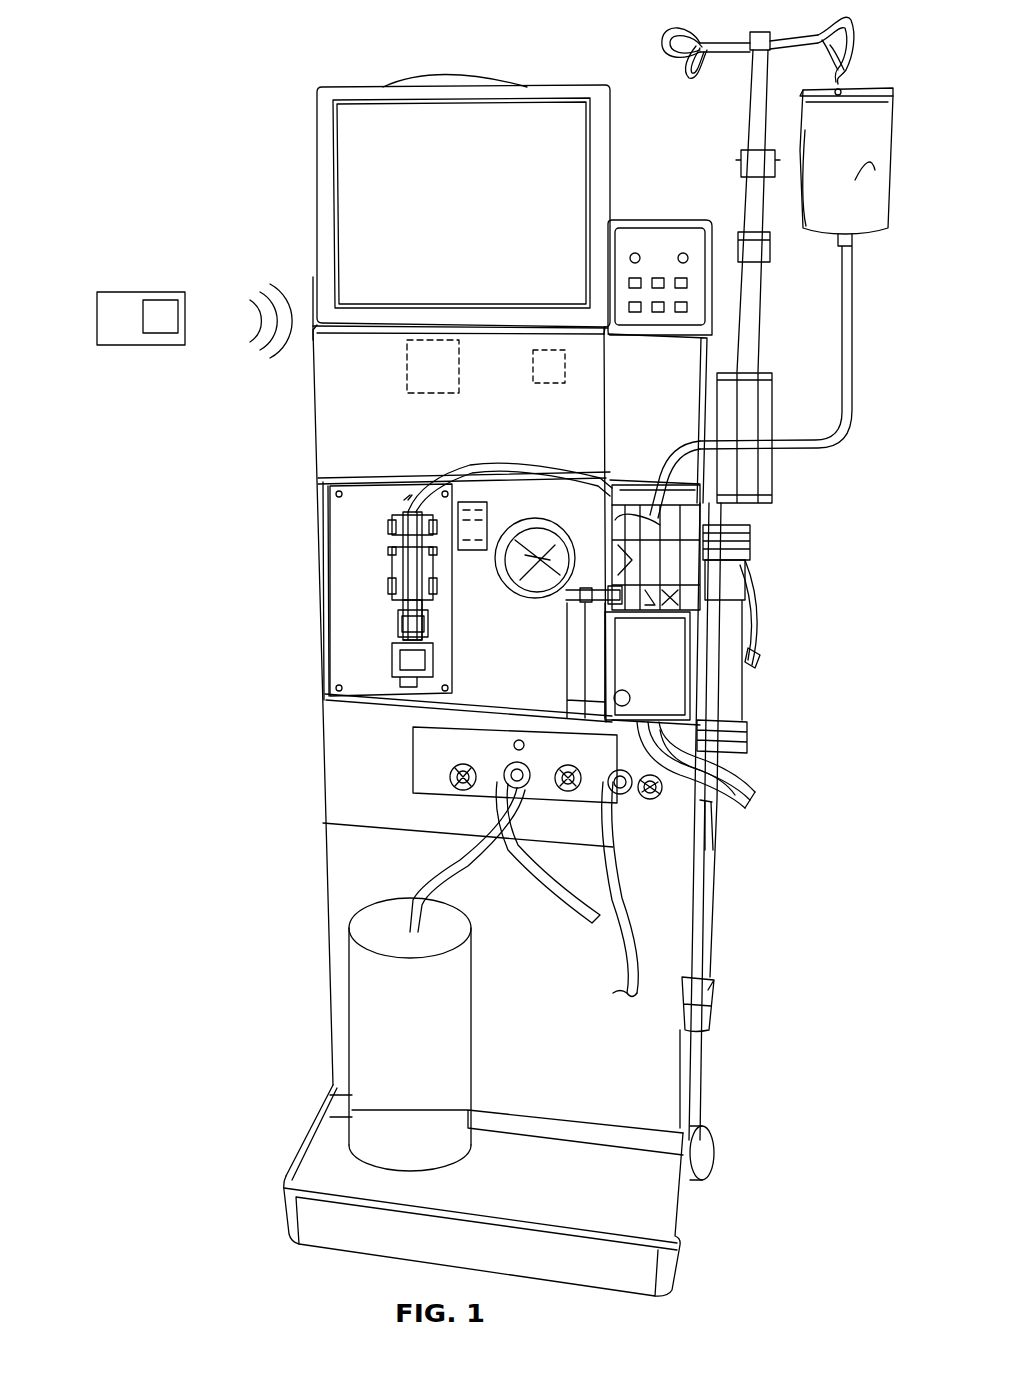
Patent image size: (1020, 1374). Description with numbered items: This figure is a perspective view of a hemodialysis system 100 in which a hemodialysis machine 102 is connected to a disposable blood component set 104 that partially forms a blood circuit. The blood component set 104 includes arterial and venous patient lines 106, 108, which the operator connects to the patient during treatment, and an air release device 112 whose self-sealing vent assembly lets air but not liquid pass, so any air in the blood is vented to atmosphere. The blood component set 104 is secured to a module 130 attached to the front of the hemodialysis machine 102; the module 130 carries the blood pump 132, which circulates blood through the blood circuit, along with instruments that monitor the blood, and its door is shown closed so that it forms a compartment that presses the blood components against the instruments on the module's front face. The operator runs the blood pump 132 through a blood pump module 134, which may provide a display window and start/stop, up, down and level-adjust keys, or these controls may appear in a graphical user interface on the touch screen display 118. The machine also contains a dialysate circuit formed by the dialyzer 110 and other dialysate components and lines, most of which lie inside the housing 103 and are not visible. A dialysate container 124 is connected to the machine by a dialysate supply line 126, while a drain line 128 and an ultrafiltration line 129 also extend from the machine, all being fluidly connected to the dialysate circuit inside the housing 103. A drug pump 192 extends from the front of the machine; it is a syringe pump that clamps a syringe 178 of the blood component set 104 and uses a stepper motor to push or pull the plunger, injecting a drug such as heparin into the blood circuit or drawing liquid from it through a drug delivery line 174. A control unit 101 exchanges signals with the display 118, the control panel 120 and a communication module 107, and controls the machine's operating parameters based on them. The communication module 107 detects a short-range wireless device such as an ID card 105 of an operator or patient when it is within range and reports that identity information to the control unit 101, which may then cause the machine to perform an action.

The hemodialysis system 100 is at (230, 128).
The control unit 101 is at (540, 385).
The hemodialysis machine 102 is at (313, 522).
The housing 103 is at (318, 452).
The disposable blood component set 104 is at (790, 605).
The ID card 105 is at (97, 293).
The arterial patient line 106 is at (727, 812).
The communication module 107 is at (433, 340).
The venous patient line 108 is at (752, 804).
The dialyzer 110 is at (745, 708).
The air release device 112 is at (735, 580).
The display 118 is at (577, 113).
The control panel 120 is at (652, 245).
The dialysate container 124 is at (362, 1045).
The dialysate supply line 126 is at (410, 876).
The drain line 128 is at (550, 893).
The ultrafiltration line 129 is at (627, 963).
The module 130 is at (760, 482).
The blood pump 132 is at (535, 600).
The blood pump module 134 is at (465, 555).
The drug delivery line 174 is at (445, 470).
The syringe 178 is at (395, 603).
The drug pump 192 is at (373, 538).